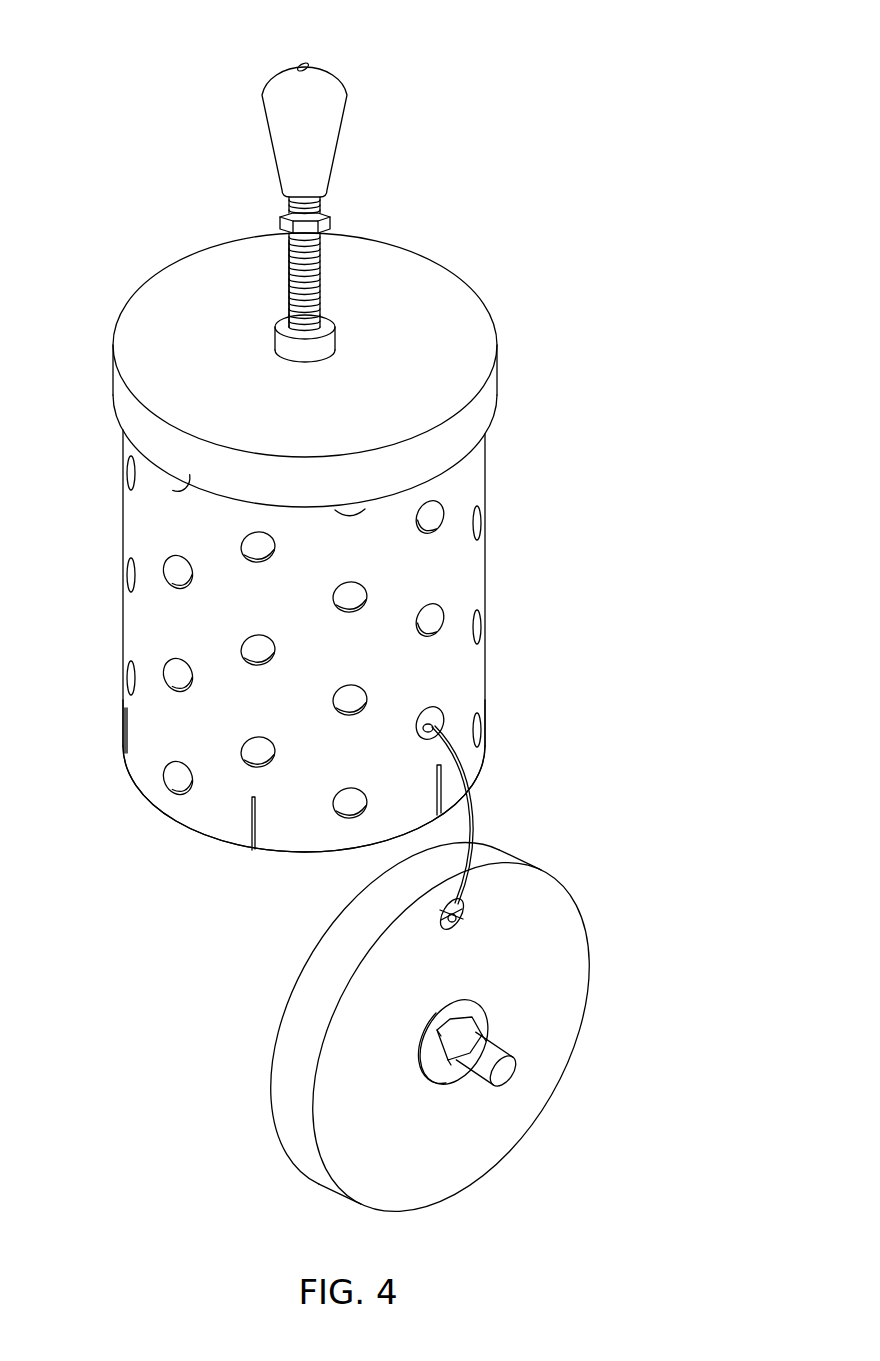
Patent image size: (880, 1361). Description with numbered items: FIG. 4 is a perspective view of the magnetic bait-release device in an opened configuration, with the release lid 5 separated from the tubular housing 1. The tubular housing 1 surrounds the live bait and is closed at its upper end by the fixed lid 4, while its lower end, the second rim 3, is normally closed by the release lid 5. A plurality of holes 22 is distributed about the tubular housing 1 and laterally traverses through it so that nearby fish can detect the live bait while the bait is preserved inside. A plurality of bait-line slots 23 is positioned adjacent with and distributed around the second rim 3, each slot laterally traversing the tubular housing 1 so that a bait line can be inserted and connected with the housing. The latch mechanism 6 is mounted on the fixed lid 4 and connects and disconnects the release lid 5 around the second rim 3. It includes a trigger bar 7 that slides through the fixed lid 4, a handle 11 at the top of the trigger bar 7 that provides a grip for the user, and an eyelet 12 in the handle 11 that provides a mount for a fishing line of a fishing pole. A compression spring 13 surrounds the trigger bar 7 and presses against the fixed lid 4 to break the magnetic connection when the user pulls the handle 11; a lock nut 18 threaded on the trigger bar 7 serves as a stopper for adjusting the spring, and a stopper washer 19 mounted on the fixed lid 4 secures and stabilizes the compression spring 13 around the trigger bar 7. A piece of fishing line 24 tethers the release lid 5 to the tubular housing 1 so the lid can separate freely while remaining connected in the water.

The tubular housing 1 is at (492, 574).
The second rim 3 is at (487, 760).
The fixed lid 4 is at (493, 387).
The release lid 5 is at (553, 888).
The latch mechanism 6 is at (316, 205).
The trigger bar 7 is at (320, 308).
The handle 11 is at (277, 147).
The eyelet 12 is at (300, 65).
The compression spring 13 is at (290, 306).
The lock nut 18 is at (280, 224).
The stopper washer 19 is at (276, 342).
The plurality of holes 22 is at (128, 578).
The plurality of bait-line slots 23 is at (125, 753).
The piece of fishing line 24 is at (478, 836).